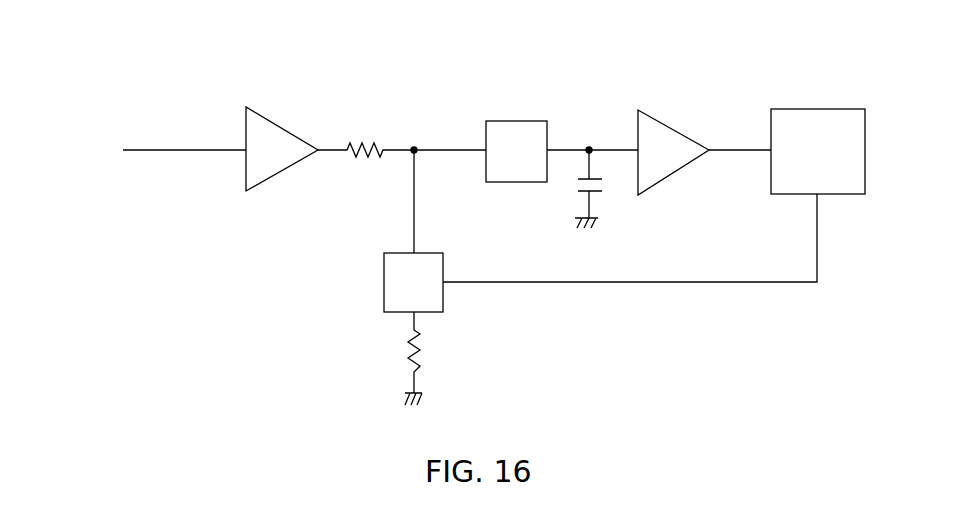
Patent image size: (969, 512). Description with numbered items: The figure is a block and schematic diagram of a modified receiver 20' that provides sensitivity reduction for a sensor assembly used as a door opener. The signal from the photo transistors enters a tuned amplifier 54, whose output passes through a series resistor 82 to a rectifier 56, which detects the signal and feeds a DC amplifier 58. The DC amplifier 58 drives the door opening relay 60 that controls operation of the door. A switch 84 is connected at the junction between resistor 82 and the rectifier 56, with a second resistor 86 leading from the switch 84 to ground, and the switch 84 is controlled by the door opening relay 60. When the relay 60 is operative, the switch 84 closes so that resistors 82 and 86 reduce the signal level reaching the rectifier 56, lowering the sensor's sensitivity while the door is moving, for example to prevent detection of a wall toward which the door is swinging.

The tuned amplifier 54 is at (273, 120).
The resistor 82 is at (365, 140).
The rectifier 56 is at (510, 120).
The DC amplifier 58 is at (673, 125).
The door opening relay 60 is at (815, 108).
The switch 84 is at (384, 280).
The resistor 86 is at (423, 350).
The receiver 20' is at (260, 322).